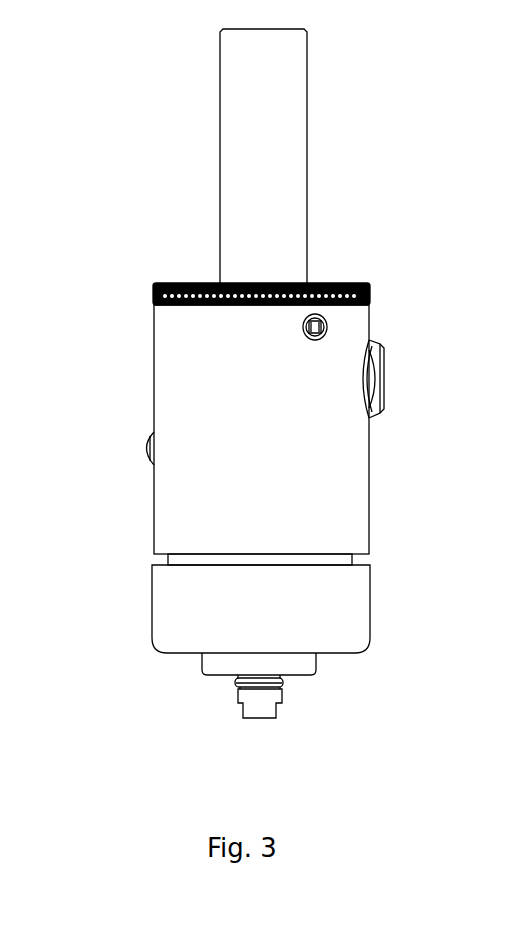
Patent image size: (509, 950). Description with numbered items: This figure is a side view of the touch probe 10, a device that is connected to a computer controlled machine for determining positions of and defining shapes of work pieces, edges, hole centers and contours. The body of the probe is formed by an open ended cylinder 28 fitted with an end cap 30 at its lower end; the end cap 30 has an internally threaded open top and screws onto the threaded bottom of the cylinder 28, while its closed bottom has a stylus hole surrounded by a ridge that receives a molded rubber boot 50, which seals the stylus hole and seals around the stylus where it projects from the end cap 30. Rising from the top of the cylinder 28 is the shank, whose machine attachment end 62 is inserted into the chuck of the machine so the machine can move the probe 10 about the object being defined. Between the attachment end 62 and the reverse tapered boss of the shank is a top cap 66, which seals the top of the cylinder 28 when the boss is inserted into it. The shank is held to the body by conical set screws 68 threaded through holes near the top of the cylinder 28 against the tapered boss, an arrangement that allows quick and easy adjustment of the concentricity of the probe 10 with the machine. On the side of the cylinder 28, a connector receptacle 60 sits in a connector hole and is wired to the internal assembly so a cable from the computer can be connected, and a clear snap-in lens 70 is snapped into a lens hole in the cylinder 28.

The touch probe 10 is at (350, 146).
The open ended cylinder 28 is at (368, 508).
The end cap 30 is at (370, 621).
The molded rubber boot 50 is at (317, 672).
The connector receptacle 60 is at (382, 347).
The machine attachment end 62 is at (298, 117).
The top cap 66 is at (155, 292).
The conical set screws 68 is at (326, 321).
The clear snap-in lens 70 is at (140, 442).